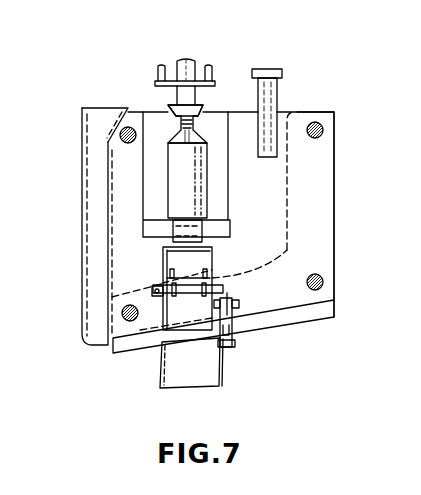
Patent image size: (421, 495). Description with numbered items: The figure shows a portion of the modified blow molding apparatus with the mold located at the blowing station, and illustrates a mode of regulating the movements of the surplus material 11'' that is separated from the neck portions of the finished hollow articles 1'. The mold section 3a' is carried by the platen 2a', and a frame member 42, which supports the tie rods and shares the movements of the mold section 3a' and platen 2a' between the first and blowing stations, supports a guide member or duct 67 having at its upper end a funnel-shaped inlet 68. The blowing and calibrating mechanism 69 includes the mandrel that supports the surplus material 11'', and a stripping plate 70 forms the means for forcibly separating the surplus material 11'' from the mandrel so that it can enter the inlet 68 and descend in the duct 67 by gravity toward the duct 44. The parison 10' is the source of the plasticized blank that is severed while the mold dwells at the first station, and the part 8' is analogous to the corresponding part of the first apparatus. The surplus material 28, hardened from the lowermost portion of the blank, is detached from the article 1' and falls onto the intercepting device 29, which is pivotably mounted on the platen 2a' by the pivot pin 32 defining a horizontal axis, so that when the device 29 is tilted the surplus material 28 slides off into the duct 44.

The blowing and calibrating mechanism 69 is at (166, 98).
The stripping plate 70 is at (214, 83).
The part analogous to part 8 of the first apparatus 8' is at (263, 53).
The surplus material 11'' is at (212, 100).
The parison 10' is at (293, 117).
The funnel-shaped inlet 68 is at (100, 119).
The hollow article 1' is at (123, 180).
The mold section 3a' is at (263, 174).
The guide member or duct 67 is at (98, 205).
The surplus material 28 is at (192, 230).
The intercepting device 29 is at (166, 280).
The platen 2a' is at (301, 214).
The pivot pin 32 is at (190, 293).
The frame member 42 is at (320, 310).
The duct 44 is at (173, 368).